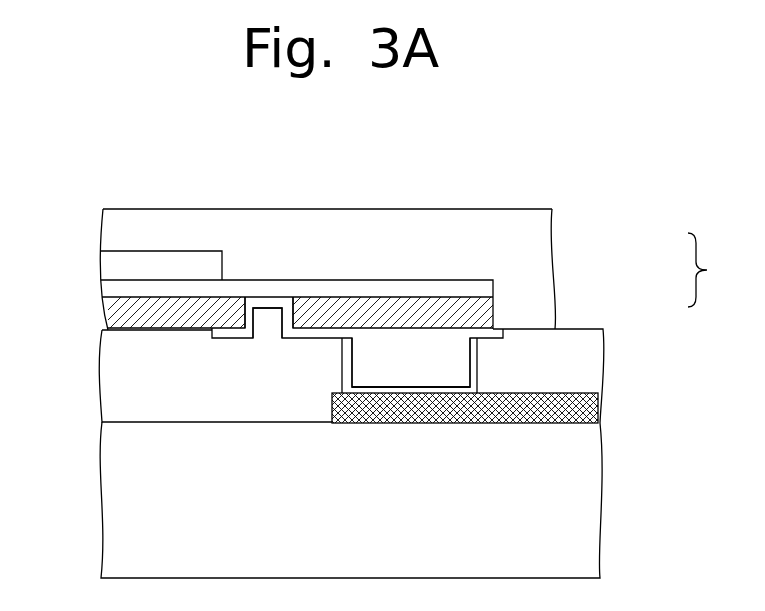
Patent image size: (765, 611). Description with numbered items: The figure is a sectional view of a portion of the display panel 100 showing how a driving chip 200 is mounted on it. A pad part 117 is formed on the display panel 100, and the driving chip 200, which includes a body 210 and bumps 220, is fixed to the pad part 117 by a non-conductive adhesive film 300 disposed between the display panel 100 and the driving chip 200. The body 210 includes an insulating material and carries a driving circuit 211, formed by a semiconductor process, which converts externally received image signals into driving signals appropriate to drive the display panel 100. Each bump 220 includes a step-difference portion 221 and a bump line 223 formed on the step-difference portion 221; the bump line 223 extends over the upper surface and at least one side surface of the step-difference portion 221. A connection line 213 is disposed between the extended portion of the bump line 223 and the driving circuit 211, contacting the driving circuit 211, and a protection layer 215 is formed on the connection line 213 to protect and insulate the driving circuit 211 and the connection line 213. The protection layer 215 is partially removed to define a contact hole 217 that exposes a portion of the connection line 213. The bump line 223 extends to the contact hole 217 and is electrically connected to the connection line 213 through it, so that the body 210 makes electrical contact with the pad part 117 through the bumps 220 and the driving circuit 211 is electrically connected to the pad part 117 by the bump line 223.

The display panel 100 is at (587, 505).
The pad part 117 is at (587, 410).
The driving chip 200 is at (652, 269).
The body 210 is at (522, 248).
The driving circuit 211 is at (115, 264).
The connection line 213 is at (117, 291).
The protection layer 215 is at (115, 312).
The contact hole 217 is at (270, 323).
The bump 220 is at (450, 363).
The step-difference portion 221 is at (380, 345).
The bump line 223 is at (425, 388).
The non-conductive adhesive film 300 is at (587, 365).